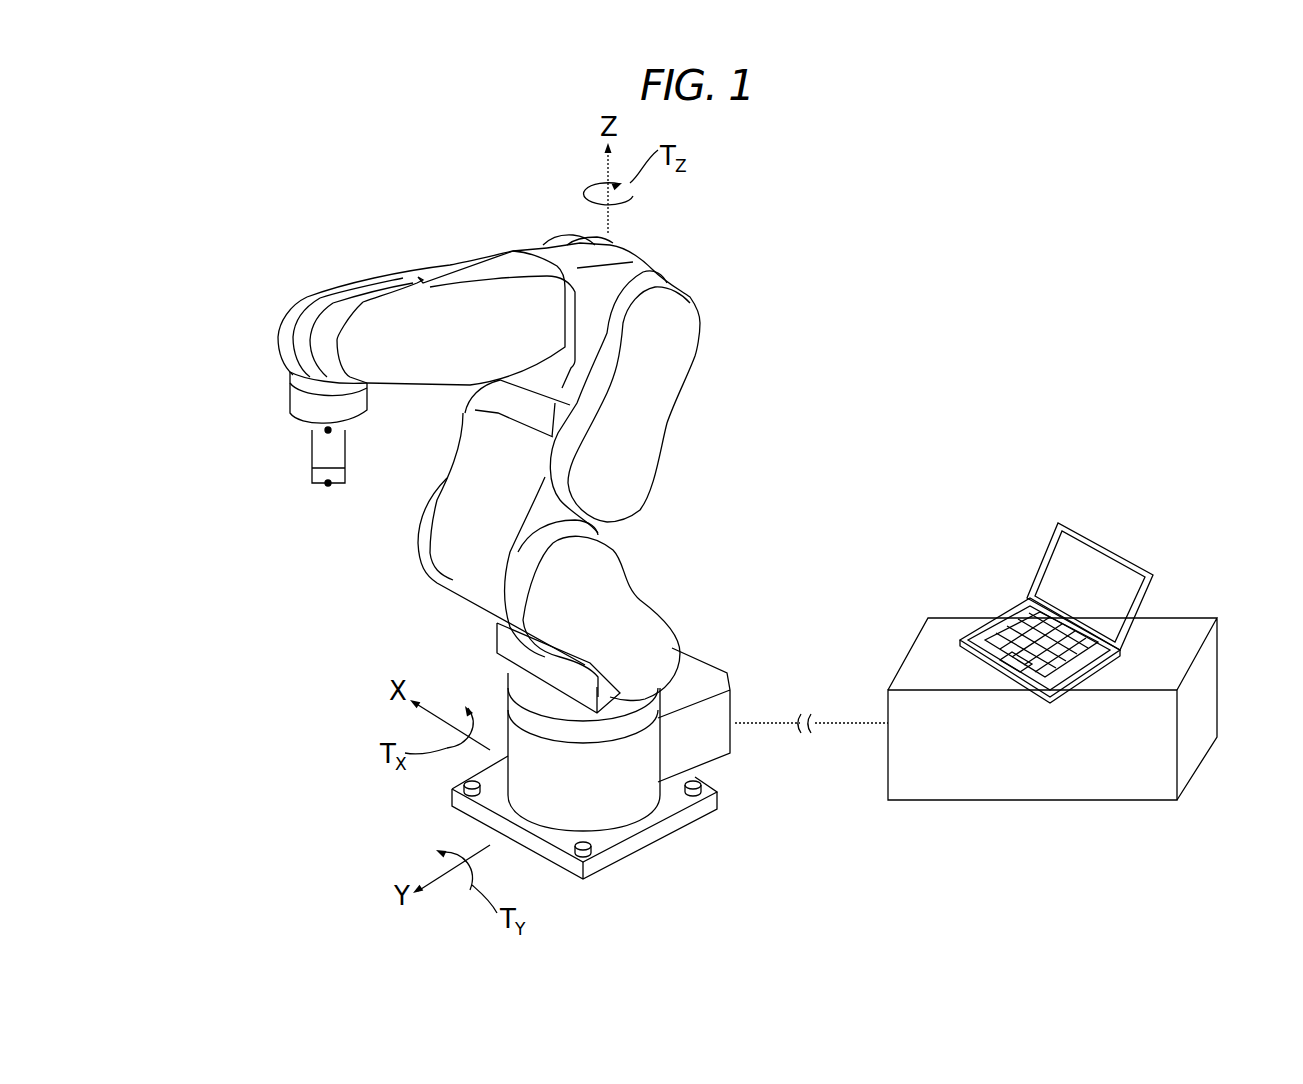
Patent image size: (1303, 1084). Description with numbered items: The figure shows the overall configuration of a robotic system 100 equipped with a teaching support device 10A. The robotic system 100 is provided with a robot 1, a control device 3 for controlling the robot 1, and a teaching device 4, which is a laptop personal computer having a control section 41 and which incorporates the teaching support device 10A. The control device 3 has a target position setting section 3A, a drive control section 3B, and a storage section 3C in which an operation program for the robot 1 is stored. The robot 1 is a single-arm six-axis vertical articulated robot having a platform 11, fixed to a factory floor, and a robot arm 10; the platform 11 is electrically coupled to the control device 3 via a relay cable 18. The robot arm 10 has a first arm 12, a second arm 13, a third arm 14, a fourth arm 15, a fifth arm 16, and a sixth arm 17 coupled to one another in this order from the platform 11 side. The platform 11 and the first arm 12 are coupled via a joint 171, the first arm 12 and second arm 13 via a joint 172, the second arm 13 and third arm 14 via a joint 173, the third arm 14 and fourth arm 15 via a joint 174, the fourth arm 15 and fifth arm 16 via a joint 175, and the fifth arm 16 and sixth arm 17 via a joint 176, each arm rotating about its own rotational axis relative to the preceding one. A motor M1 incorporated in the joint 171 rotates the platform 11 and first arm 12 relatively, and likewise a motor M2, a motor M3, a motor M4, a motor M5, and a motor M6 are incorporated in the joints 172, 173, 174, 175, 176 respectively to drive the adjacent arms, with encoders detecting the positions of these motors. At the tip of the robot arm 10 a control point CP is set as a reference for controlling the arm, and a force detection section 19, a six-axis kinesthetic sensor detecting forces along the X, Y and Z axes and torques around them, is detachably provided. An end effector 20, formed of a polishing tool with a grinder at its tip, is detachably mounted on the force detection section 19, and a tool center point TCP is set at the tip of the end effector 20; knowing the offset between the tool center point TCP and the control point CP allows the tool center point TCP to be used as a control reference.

The robot 1 is at (776, 223).
The control device 3 is at (1184, 612).
The target position setting section 3A is at (943, 760).
The drive control section 3B is at (1010, 760).
The storage section 3C is at (1082, 760).
The teaching device 4 is at (1056, 584).
The robot arm 10 is at (702, 294).
The teaching support device 10A is at (1176, 494).
The platform 11 is at (583, 808).
The first arm 12 is at (663, 637).
The second arm 13 is at (640, 460).
The third arm 14 is at (613, 257).
The fourth arm 15 is at (481, 300).
The fifth arm 16 is at (290, 305).
The sixth arm 17 is at (303, 386).
The relay cable 18 is at (847, 727).
The force detection section 19 is at (350, 410).
The end effector 20 is at (313, 448).
The control section 41 is at (1070, 577).
The robotic system 100 is at (1116, 223).
The joint 171 is at (533, 683).
The joint 172 is at (410, 547).
The joint 173 is at (653, 262).
The joint 174 is at (543, 250).
The joint 175 is at (323, 297).
The joint 176 is at (347, 367).
The motor M1 is at (627, 770).
The motor M2 is at (613, 615).
The motor M3 is at (605, 492).
The motor M4 is at (590, 303).
The motor M5 is at (457, 330).
The motor M6 is at (285, 316).
The control point CP is at (325, 429).
The tool center point TCP is at (325, 485).